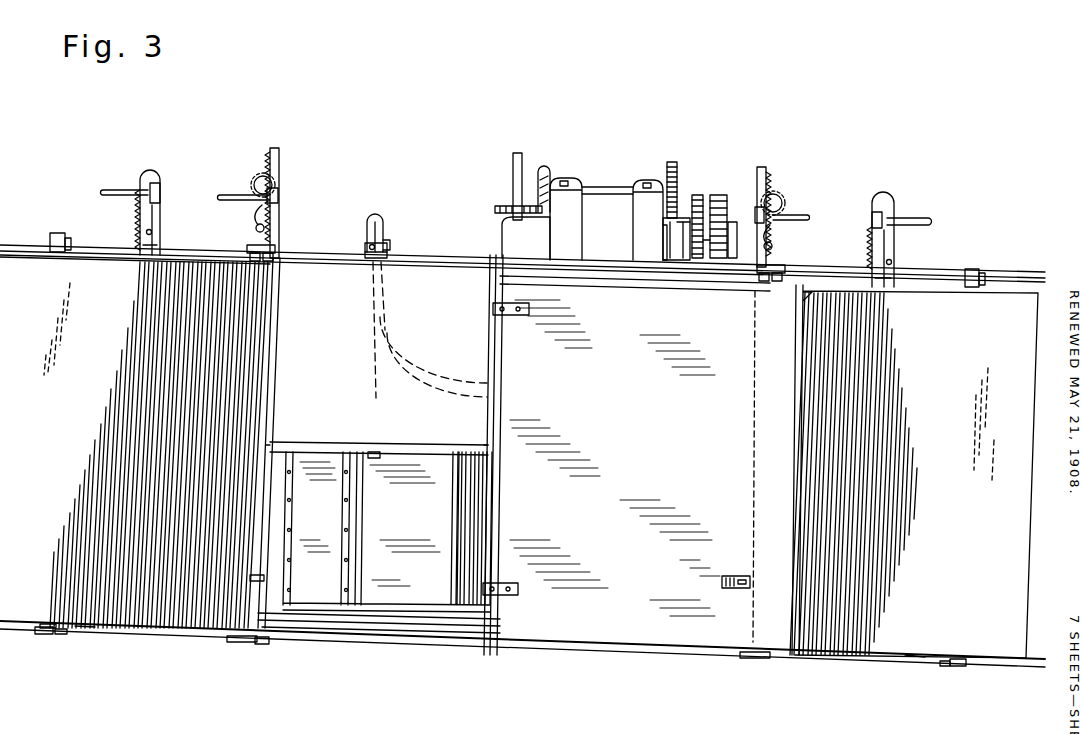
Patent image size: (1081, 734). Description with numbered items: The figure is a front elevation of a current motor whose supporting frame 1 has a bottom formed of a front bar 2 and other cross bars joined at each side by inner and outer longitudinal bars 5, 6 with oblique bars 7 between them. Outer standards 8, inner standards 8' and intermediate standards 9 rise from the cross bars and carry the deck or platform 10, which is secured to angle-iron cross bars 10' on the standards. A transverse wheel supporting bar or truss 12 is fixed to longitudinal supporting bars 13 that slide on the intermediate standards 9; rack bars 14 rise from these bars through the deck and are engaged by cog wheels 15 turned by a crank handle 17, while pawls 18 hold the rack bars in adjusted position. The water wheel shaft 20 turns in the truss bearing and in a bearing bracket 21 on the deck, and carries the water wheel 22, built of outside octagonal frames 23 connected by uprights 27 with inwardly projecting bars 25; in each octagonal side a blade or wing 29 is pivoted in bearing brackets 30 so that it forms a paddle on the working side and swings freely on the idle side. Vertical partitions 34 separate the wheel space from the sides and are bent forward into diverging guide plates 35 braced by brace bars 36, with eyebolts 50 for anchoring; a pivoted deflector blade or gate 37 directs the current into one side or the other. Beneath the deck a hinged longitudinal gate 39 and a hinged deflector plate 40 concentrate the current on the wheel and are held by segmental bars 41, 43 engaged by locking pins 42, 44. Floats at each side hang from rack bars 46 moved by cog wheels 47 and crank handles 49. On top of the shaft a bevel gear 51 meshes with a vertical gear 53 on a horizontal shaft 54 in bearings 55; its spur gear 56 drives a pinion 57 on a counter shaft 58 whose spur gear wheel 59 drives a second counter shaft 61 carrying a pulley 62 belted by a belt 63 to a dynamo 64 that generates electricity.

The supporting frame 1 is at (379, 640).
The front bar 2 is at (36, 628).
The inner longitudinal bar 5 is at (222, 640).
The outer longitudinal bar 6 is at (62, 634).
The oblique bar 7 is at (85, 630).
The outer standard 8 is at (506, 629).
The inner standard 8' is at (505, 269).
The intermediate standard 9 is at (262, 356).
The deck or platform 10 is at (522, 251).
The angle-iron cross bar 10' is at (522, 268).
The wheel supporting bar or truss 12 is at (380, 625).
The supporting bar 13 is at (263, 645).
The rack bar 14 is at (784, 168).
The cog wheel 15 is at (260, 183).
The crank handle 17 is at (232, 196).
The pawl 18 is at (258, 218).
The water wheel shaft 20 is at (513, 185).
The bearing bracket 21 is at (503, 238).
The water wheel 22 is at (454, 440).
The outside octagonal frame 23 is at (322, 443).
The bar 25 is at (270, 445).
The upright 27 is at (287, 520).
The blade or wing 29 is at (386, 532).
The bearing bracket 30 is at (374, 445).
The vertical partition 34 is at (275, 382).
The guide plate 35 is at (519, 457).
The brace bar 36 is at (50, 238).
The deflector blade or gate 37 is at (615, 458).
The longitudinal gate 39 is at (496, 414).
The deflector plate 40 is at (444, 265).
The segmental bar 41 is at (378, 222).
The pawl or locking pin 42 is at (365, 245).
The segmental bar 43 is at (384, 232).
The pawl or locking pin 44 is at (386, 247).
The rack bar 46 is at (158, 246).
The cog wheel 47 is at (142, 178).
The crank handle 49 is at (110, 191).
The eyebolt 50 is at (260, 578).
The bevel gear 51 is at (495, 207).
The vertical bevel gear 53 is at (542, 172).
The horizontal shaft 54 is at (604, 190).
The bearing 55 is at (632, 236).
The spur gear 56 is at (672, 162).
The pinion 57 is at (652, 242).
The counter shaft 58 is at (678, 210).
The spur gear wheel 59 is at (700, 200).
The second counter shaft 61 is at (742, 240).
The balance wheel or pulley 62 is at (728, 215).
The belt 63 is at (718, 265).
The dynamo 64 is at (680, 262).